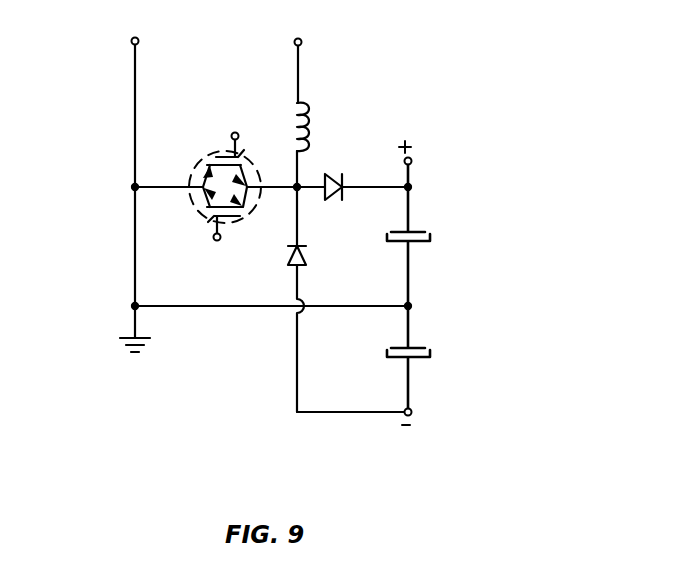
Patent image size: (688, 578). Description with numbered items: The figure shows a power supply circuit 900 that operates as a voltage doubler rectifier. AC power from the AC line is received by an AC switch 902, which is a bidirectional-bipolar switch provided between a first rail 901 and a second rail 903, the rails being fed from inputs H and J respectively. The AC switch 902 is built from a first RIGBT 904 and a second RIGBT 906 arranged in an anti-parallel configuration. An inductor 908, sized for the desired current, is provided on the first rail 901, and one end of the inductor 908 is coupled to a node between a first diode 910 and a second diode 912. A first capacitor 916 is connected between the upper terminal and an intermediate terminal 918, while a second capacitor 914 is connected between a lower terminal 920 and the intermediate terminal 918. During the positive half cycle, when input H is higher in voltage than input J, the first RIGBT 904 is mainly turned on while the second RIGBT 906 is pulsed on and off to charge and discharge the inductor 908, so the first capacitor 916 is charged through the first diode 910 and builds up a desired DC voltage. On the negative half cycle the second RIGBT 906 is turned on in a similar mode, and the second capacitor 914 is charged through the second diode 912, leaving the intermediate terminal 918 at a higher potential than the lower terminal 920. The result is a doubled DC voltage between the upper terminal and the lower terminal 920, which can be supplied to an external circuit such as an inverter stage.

The power supply circuit 900 is at (453, 38).
The first rail 901 is at (298, 83).
The AC switch 902 is at (203, 157).
The second rail 903 is at (135, 92).
The first RIGBT 904 is at (218, 246).
The second RIGBT 906 is at (242, 130).
The inductor 908 is at (295, 108).
The first diode 910 is at (340, 199).
The second diode 912 is at (303, 264).
The second capacitor 914 is at (415, 360).
The first capacitor 916 is at (413, 245).
The intermediate terminal 918 is at (410, 310).
The lower terminal 920 is at (412, 414).